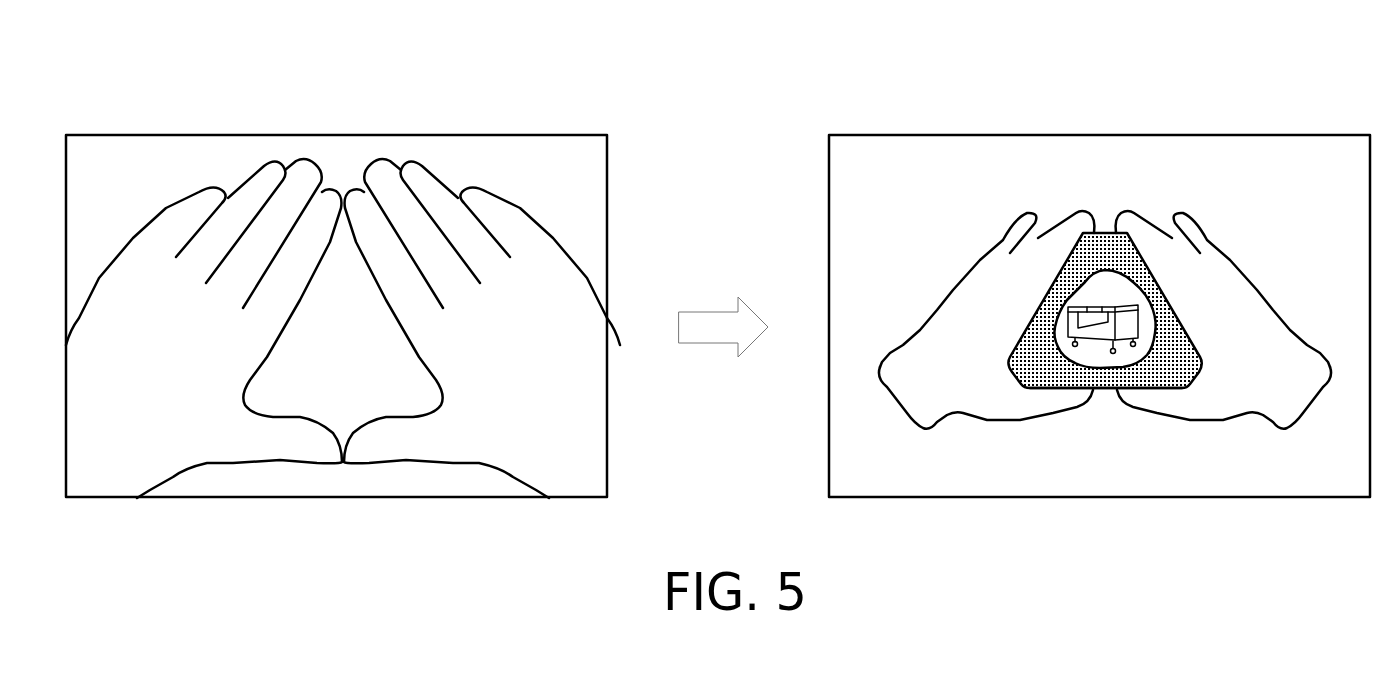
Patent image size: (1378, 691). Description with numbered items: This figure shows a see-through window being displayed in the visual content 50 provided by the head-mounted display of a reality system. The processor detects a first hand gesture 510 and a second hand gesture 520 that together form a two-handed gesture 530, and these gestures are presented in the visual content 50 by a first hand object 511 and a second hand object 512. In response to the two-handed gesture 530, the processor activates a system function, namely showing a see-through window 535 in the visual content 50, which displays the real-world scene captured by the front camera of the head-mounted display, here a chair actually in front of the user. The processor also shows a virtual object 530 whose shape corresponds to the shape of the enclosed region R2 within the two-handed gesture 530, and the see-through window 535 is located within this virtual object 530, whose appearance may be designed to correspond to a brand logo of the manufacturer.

The visual content 50 is at (926, 216).
The first hand gesture 510 is at (1040, 203).
The second hand gesture 520 is at (1167, 203).
The first hand object 511 is at (958, 377).
The second hand object 512 is at (1235, 380).
The two-handed gesture 530 is at (1180, 58).
The see-through window 535 is at (1102, 294).
The enclosed region R2 is at (1107, 391).